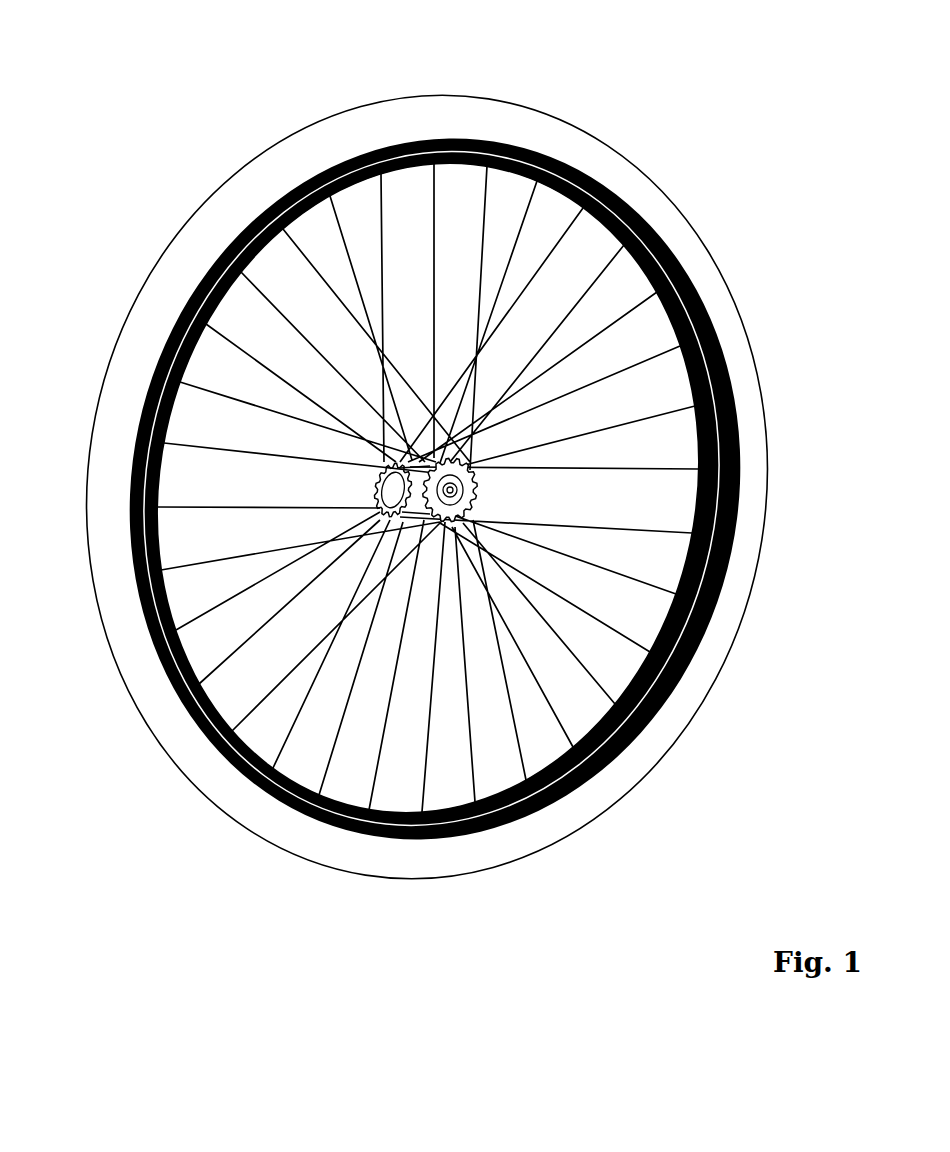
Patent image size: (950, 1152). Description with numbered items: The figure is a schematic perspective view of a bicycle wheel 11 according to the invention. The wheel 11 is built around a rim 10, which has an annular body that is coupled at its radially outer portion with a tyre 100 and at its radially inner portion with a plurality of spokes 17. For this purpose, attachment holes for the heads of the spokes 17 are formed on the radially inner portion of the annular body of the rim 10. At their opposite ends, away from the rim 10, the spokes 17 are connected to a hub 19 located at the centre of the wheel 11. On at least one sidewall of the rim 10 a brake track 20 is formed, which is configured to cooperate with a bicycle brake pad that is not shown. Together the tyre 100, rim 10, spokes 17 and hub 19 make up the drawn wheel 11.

The bicycle wheel 11 is at (142, 144).
The rim 10 is at (512, 141).
The brake track 20 is at (397, 147).
The spokes 17 is at (605, 237).
The hub 19 is at (480, 495).
The tyre 100 is at (278, 823).